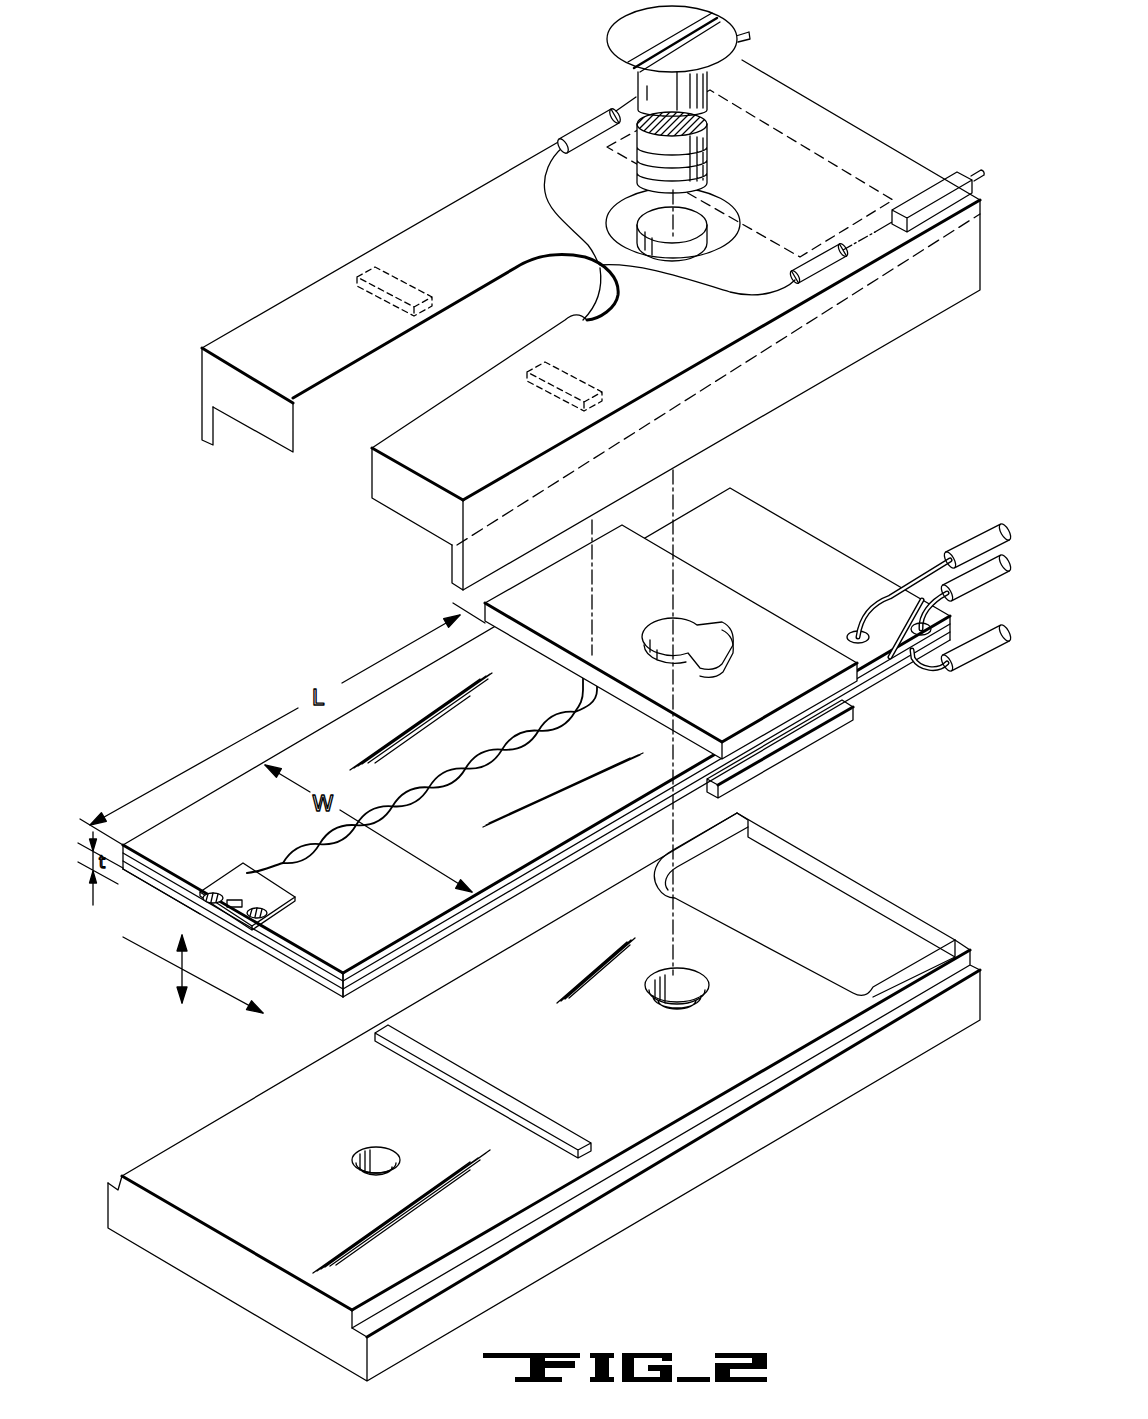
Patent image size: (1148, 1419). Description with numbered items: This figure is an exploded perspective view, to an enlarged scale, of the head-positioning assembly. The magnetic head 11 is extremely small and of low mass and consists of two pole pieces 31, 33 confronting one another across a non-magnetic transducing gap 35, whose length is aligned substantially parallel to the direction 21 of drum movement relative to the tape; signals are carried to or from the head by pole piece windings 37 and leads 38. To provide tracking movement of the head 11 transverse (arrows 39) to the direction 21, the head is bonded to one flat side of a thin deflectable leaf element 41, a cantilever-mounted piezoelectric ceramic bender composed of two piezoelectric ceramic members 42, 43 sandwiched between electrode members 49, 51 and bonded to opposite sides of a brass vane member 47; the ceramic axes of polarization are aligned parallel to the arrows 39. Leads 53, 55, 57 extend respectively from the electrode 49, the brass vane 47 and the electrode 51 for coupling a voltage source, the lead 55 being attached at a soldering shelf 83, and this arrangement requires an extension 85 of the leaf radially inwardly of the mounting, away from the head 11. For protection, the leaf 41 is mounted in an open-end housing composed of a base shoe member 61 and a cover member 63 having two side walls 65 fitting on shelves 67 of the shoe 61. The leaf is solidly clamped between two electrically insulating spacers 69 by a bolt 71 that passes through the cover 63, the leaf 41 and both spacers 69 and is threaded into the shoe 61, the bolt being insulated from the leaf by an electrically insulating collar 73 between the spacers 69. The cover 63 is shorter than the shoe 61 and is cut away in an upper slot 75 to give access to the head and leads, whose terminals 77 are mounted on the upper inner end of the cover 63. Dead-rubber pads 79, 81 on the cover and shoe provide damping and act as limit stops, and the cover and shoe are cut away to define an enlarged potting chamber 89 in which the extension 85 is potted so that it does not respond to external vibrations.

The head 11 is at (221, 880).
The direction of drum movement 21 is at (534, 766).
The pole piece 31 is at (200, 898).
The pole piece 33 is at (243, 920).
The transducing gap 35 is at (227, 908).
The pole piece windings 37 is at (217, 892).
The leads 38 is at (300, 865).
The arrows 39 is at (185, 956).
The leaf element 41 is at (331, 1007).
The piezoelectric ceramic member 42 is at (393, 950).
The piezoelectric ceramic member 43 is at (384, 969).
The brass vane member 47 is at (440, 928).
The electrode member 49 is at (481, 890).
The electrode member 51 is at (473, 920).
The lead 53 is at (912, 582).
The lead 55 is at (950, 596).
The lead 57 is at (928, 668).
The base shoe member 61 is at (810, 1112).
The cover member 63 is at (567, 298).
The side walls 65 is at (205, 418).
The shelves 67 is at (115, 1180).
The electrically insulating spacers 69 is at (713, 713).
The bolt 71 is at (613, 39).
The electrically insulating collar 73 is at (692, 630).
The upper slot 75 is at (326, 424).
The terminals 77 is at (728, 62).
The dead-rubber pad 79 is at (378, 300).
The dead-rubber pad 81 is at (490, 1090).
The soldering shelf 83 is at (948, 619).
The extension 85 is at (677, 615).
The potting chamber 89 is at (913, 260).